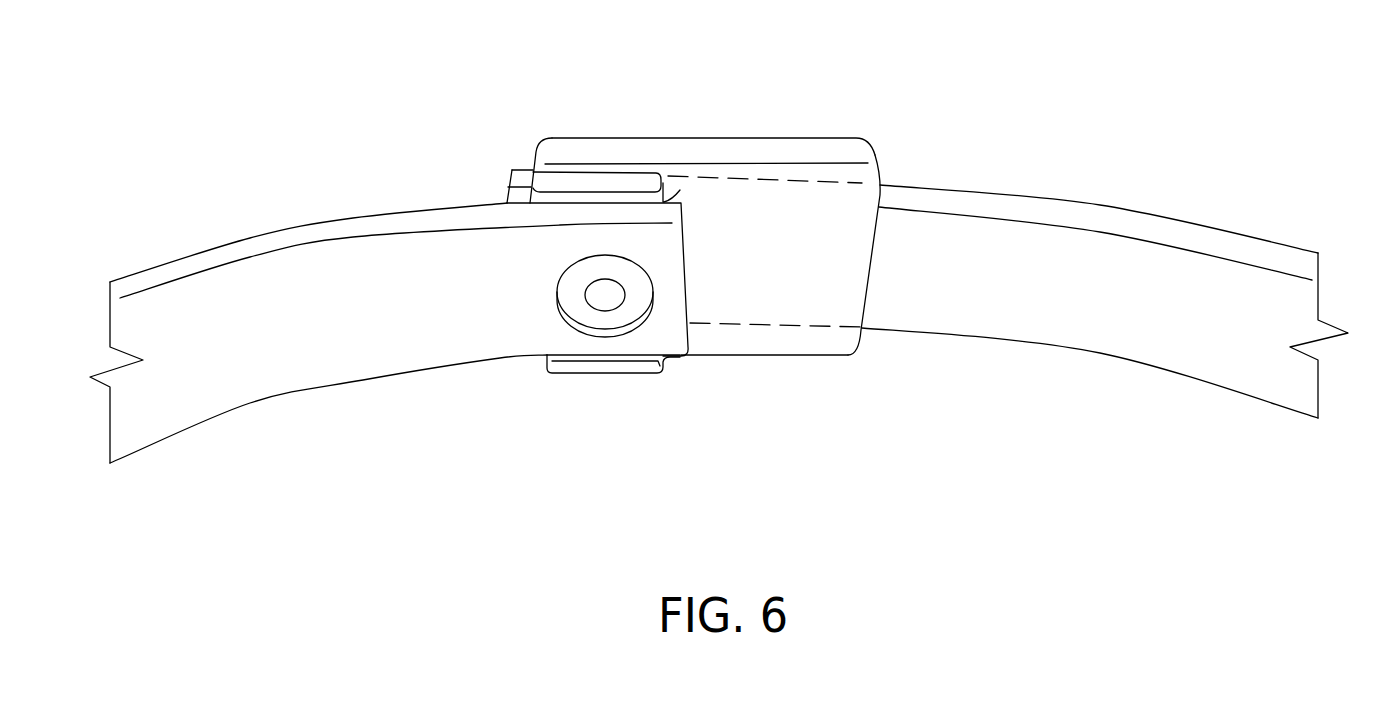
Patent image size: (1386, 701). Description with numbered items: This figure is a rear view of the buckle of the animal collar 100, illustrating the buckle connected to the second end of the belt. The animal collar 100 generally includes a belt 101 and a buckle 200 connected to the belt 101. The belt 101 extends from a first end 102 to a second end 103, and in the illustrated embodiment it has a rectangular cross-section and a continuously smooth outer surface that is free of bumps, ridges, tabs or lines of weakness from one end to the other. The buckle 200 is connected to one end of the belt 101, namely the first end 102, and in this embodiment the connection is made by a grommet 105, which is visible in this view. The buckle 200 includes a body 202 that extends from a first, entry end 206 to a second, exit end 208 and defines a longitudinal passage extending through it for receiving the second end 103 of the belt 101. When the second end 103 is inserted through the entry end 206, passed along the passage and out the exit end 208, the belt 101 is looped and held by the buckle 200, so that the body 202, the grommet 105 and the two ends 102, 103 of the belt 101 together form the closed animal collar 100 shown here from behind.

The animal collar 100 is at (1140, 115).
The belt 101 is at (1163, 370).
The first end 102 is at (672, 287).
The second end 103 is at (505, 193).
The grommet 105 is at (572, 300).
The buckle 200 is at (841, 112).
The body 202 is at (792, 358).
The entry end 206 is at (858, 343).
The exit end 208 is at (536, 152).